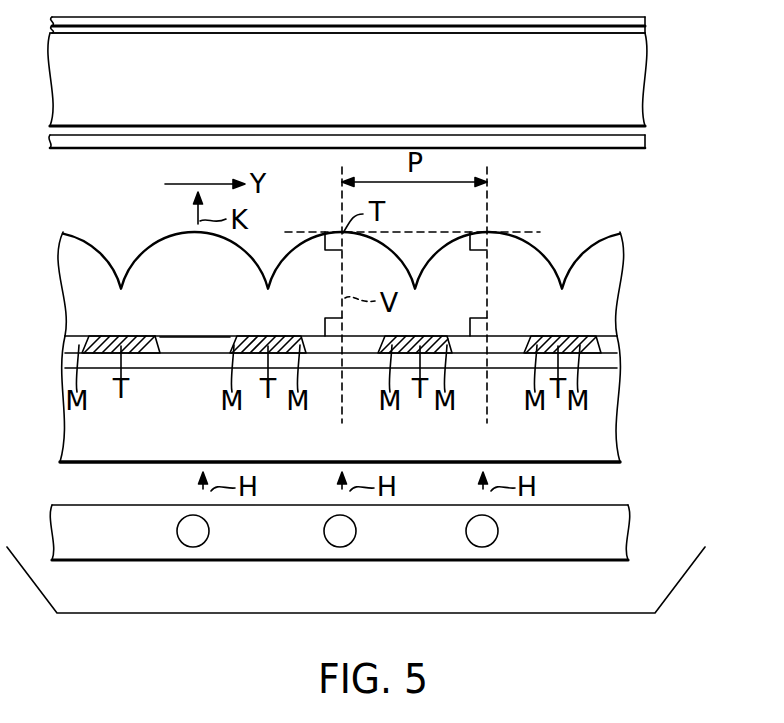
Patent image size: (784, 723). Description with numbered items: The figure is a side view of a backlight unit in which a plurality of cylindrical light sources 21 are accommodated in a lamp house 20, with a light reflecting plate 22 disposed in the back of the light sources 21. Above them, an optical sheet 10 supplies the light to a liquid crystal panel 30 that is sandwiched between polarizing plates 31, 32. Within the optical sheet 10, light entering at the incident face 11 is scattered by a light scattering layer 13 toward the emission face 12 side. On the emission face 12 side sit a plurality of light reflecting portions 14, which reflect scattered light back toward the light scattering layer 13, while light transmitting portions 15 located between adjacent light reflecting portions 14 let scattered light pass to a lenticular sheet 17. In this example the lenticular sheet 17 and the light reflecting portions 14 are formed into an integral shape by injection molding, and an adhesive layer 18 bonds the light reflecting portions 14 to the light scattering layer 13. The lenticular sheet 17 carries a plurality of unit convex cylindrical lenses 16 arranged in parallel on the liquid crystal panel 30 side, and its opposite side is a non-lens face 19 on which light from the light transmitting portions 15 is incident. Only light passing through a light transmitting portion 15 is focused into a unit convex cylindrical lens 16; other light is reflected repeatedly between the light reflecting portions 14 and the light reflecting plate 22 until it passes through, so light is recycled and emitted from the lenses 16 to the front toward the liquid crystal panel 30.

The optical sheet 10 is at (346, 244).
The incident face 11 is at (613, 467).
The emission face 12 is at (613, 357).
The light scattering layer 13 is at (608, 440).
The light reflecting portion 14 is at (143, 336).
The light transmitting portion 15 is at (193, 350).
The unit convex cylindrical lens 16 is at (105, 250).
The lenticular sheet 17 is at (78, 300).
The adhesive layer 18 is at (592, 362).
The non-lens face 19 is at (177, 334).
The lamp house 20 is at (620, 535).
The cylindrical light source 21 is at (192, 547).
The light reflecting plate 22 is at (685, 575).
The liquid crystal panel 30 is at (640, 80).
The polarizing plate 31 is at (646, 23).
The polarizing plate 32 is at (646, 141).